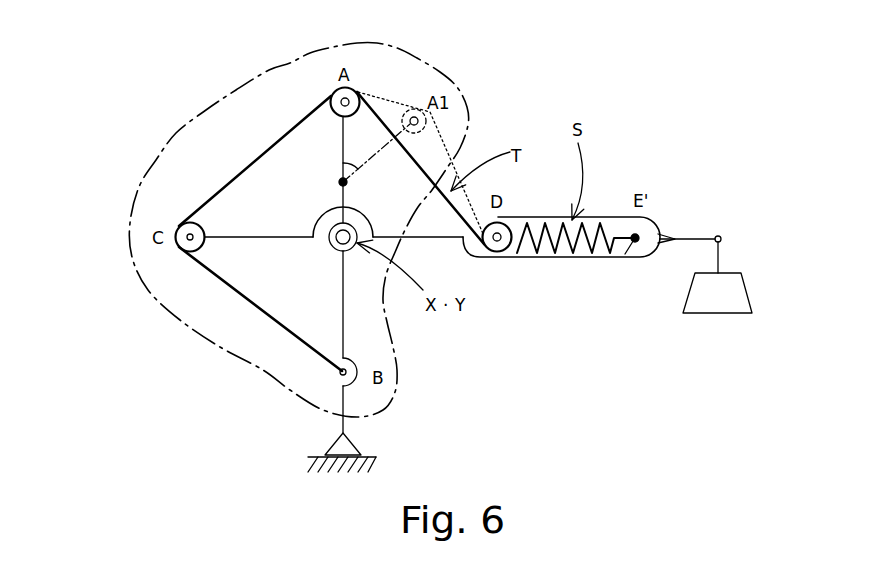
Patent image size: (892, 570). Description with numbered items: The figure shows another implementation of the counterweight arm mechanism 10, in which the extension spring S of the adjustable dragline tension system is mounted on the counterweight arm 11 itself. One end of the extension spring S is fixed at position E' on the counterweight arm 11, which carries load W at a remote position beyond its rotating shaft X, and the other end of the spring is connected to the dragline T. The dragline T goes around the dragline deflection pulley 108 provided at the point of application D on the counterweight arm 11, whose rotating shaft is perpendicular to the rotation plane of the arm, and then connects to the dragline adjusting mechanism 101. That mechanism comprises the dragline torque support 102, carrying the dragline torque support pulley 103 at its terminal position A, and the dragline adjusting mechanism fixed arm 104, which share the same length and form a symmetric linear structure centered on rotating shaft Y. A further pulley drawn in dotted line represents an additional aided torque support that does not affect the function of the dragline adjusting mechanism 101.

The counterweight arm mechanism 10 is at (494, 79).
The counterweight arm 11 is at (698, 230).
The dragline adjusting mechanism 101 is at (217, 352).
The dragline torque support 102 is at (349, 136).
The dragline torque support pulley 103 is at (334, 91).
The dragline adjusting mechanism fixed arm 104 is at (353, 316).
The dragline deflection pulley 108 is at (497, 252).